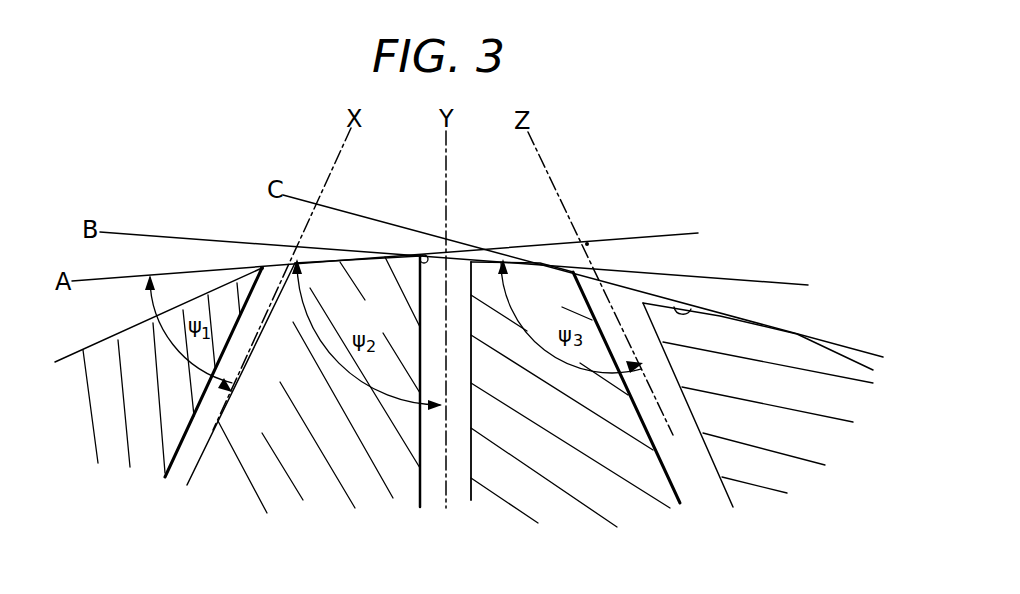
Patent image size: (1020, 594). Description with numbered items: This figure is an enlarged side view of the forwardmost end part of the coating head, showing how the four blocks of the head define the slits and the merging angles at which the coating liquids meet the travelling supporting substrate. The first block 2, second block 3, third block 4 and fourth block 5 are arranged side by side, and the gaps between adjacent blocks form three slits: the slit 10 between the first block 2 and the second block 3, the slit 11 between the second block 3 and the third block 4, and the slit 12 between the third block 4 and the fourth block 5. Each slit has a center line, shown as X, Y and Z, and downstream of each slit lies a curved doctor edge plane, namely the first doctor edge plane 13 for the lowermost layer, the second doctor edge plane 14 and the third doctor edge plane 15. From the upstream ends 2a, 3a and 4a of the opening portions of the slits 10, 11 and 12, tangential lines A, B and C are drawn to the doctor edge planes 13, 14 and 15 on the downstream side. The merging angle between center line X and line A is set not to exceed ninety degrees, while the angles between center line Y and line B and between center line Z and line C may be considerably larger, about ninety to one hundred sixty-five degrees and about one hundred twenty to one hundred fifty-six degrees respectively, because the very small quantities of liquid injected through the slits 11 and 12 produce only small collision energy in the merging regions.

The first block 2 is at (122, 427).
The upstream end of the opening portion of slit 10 2a is at (262, 267).
The second block 3 is at (335, 452).
The upstream end of the opening portion of slit 11 3a is at (428, 256).
The third block 4 is at (568, 462).
The upstream end of the opening portion of slit 12 4a is at (590, 243).
The fourth block 5 is at (832, 402).
The slit 10 is at (190, 447).
The slit 11 is at (462, 432).
The slit 12 is at (658, 378).
The first doctor edge plane 13 is at (383, 262).
The second doctor edge plane 14 is at (537, 263).
The third doctor edge plane 15 is at (691, 309).